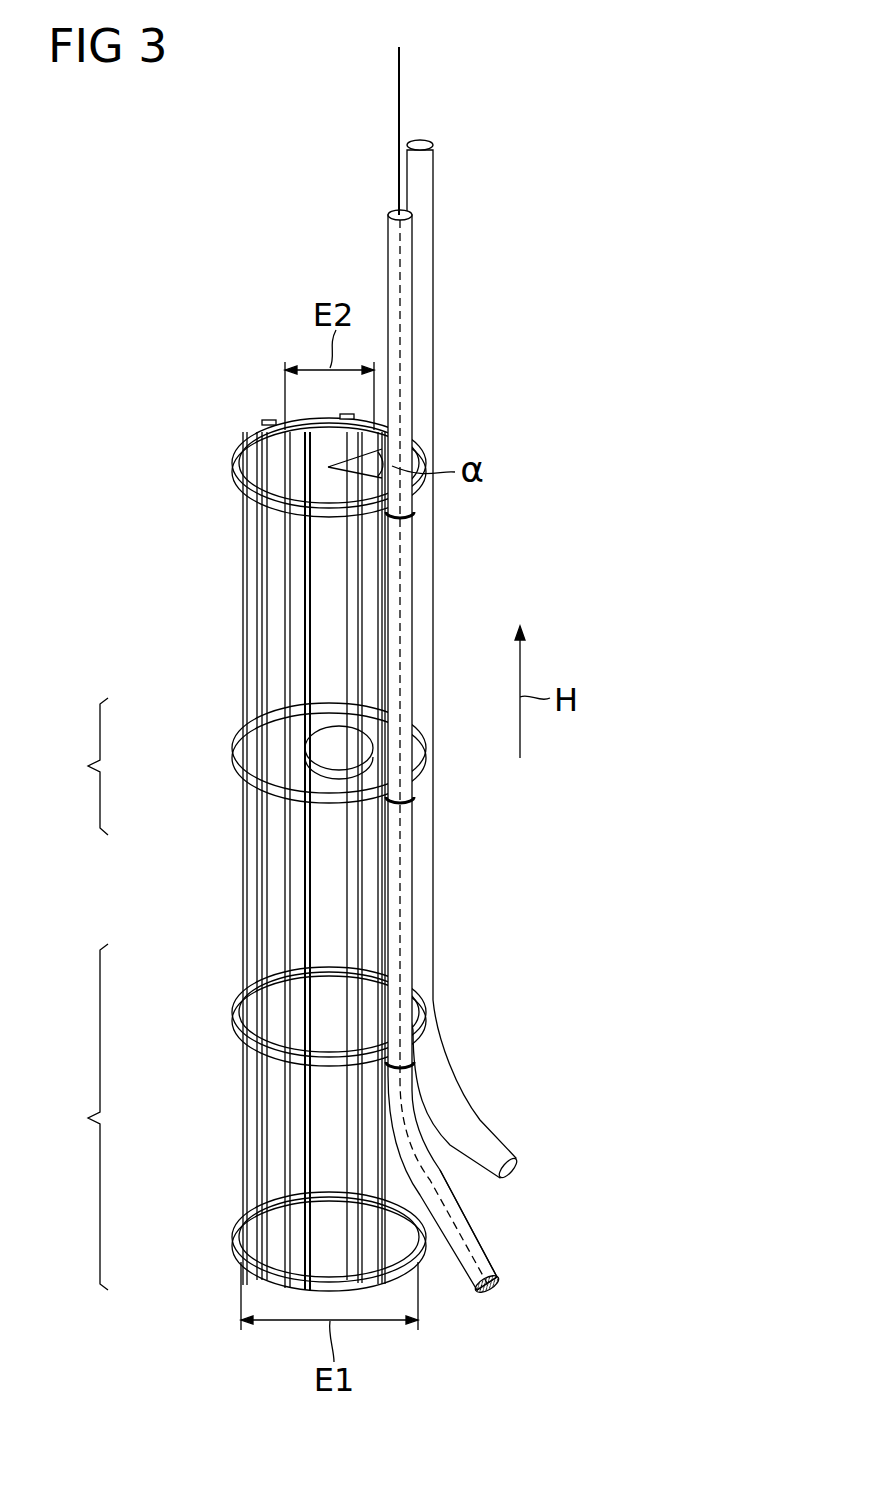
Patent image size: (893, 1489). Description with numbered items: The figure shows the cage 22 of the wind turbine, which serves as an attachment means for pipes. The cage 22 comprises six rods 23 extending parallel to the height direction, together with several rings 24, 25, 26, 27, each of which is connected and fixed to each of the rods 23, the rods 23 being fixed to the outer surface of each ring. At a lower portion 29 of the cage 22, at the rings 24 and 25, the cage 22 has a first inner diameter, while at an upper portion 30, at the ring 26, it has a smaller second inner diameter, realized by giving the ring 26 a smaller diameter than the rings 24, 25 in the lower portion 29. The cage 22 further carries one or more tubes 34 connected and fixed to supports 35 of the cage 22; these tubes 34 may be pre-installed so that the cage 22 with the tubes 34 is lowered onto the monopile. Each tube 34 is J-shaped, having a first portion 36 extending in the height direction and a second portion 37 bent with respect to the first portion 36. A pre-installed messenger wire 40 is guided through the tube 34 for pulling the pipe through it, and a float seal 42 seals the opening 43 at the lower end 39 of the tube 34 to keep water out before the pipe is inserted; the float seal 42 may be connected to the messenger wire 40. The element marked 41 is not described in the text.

The cage 22 is at (220, 330).
The rods 23 is at (273, 463).
The ring 24 is at (233, 1248).
The ring 25 is at (233, 1010).
The ring 26 is at (233, 750).
The ring 27 is at (246, 441).
The lower portion 29 is at (75, 1117).
The upper portion 30 is at (75, 766).
The tubes 34 is at (410, 716).
The supports 35 is at (405, 516).
The first portion 36 is at (433, 320).
The second portion 37 is at (497, 1140).
The lower end 39 is at (483, 1268).
The messenger wire 40 is at (403, 67).
The tube opening 41 is at (412, 215).
The float seal 42 is at (497, 1293).
The opening 43 is at (497, 1273).